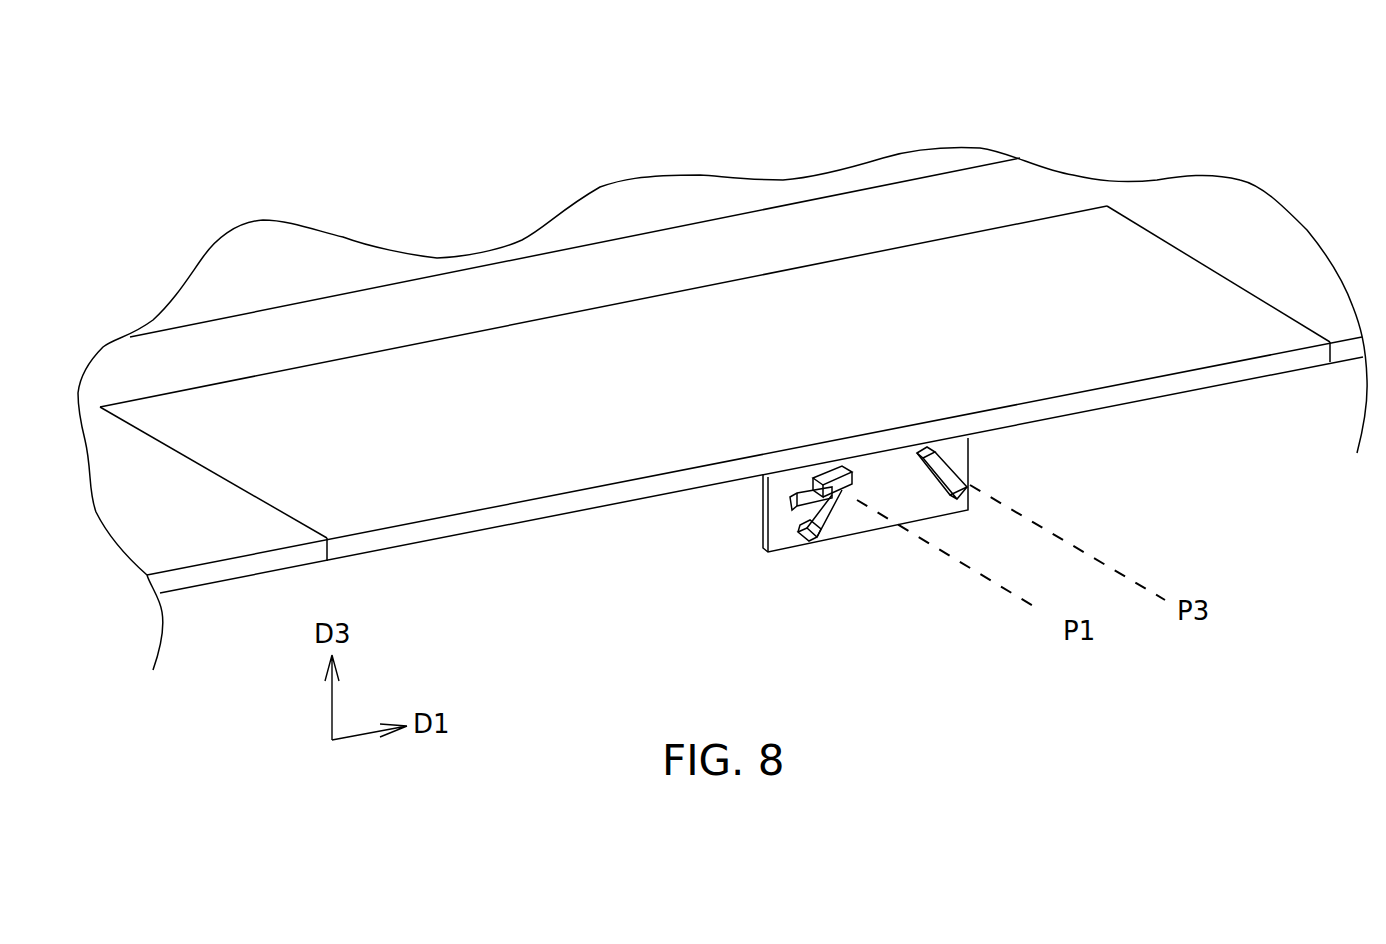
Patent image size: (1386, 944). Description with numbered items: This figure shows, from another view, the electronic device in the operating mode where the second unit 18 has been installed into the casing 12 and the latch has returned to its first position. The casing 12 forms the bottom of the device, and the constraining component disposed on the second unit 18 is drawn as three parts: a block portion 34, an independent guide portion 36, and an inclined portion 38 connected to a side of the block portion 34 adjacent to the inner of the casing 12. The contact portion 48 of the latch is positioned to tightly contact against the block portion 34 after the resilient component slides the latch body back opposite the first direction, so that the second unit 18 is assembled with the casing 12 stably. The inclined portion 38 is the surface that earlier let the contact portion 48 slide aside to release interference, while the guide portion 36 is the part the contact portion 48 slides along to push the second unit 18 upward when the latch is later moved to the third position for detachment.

The casing 12 is at (1280, 253).
The second unit 18 is at (625, 340).
The block portion 34 is at (810, 492).
The guide portion 36 is at (950, 452).
The inclined portion 38 is at (797, 520).
The contact portion 48 is at (852, 478).